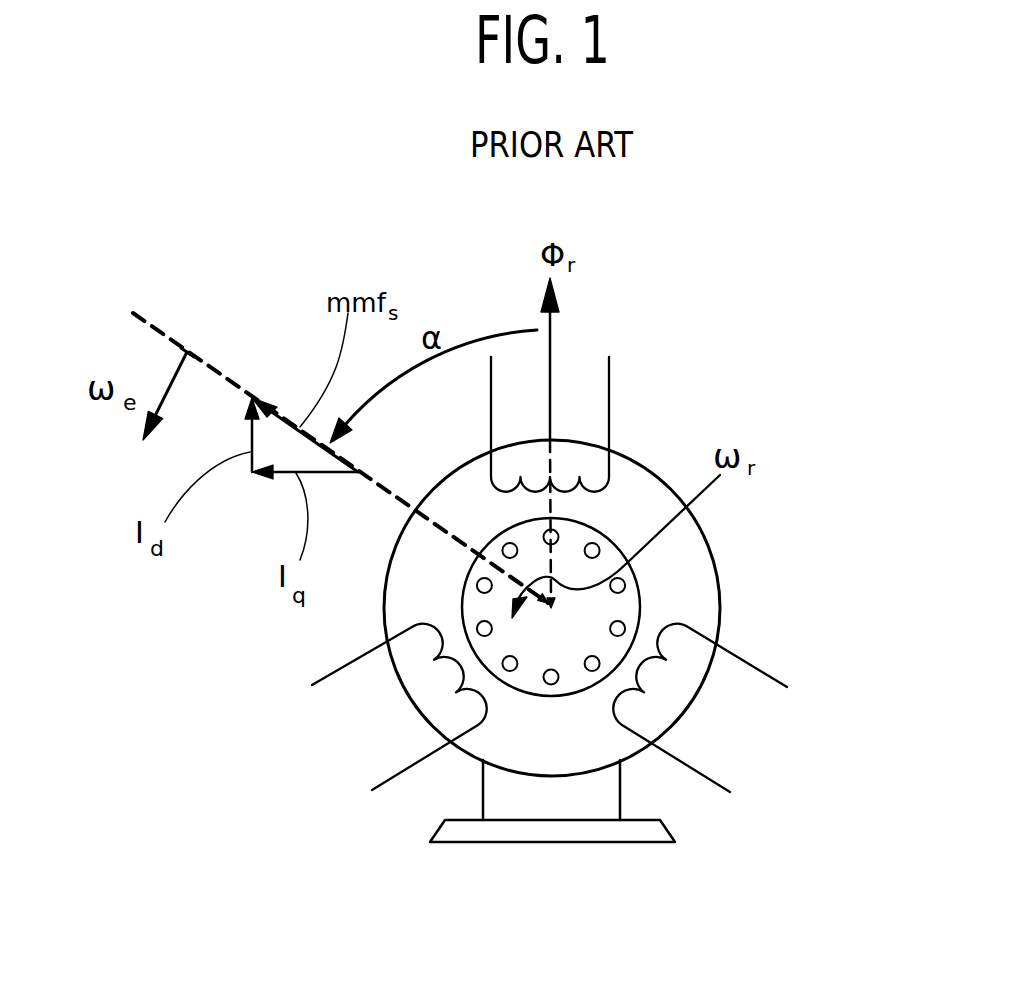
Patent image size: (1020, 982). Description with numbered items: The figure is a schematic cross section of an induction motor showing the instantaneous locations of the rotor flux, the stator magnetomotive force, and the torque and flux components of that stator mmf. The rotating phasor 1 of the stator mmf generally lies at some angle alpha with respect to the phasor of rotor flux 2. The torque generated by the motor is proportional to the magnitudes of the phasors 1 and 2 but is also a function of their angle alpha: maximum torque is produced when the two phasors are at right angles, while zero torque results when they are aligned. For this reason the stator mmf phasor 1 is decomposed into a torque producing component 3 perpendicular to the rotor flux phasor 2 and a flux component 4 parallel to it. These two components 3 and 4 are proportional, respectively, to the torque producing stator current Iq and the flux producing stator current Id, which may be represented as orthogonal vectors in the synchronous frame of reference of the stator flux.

The rotating phasor of the stator magnetomotive force 1 is at (262, 405).
The phasor of rotor flux 2 is at (553, 355).
The torque producing component 3 is at (328, 473).
The flux component 4 is at (250, 472).